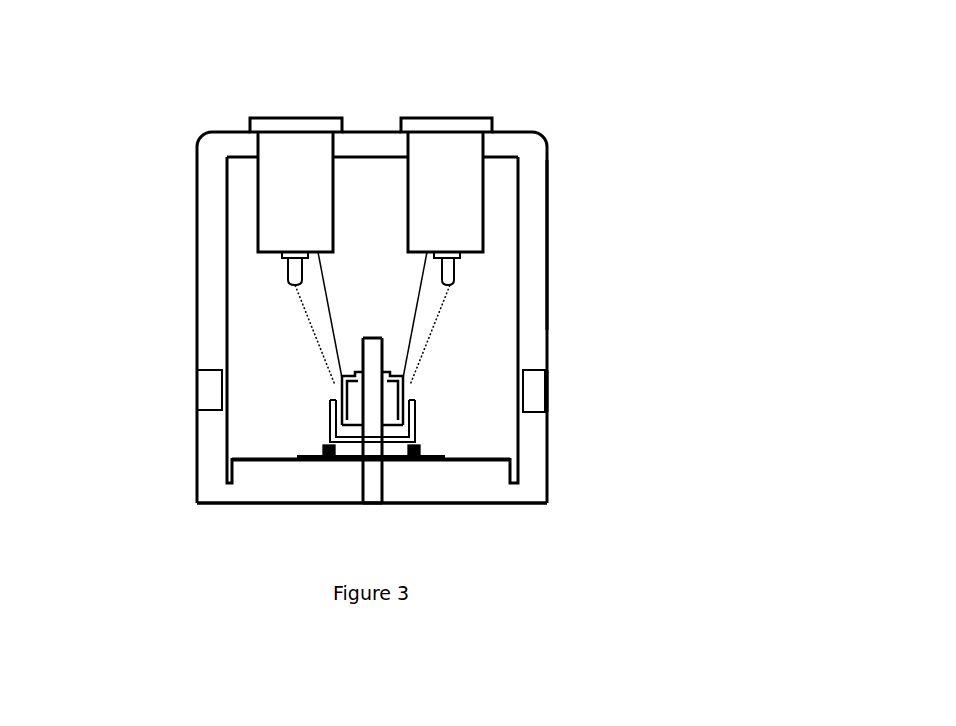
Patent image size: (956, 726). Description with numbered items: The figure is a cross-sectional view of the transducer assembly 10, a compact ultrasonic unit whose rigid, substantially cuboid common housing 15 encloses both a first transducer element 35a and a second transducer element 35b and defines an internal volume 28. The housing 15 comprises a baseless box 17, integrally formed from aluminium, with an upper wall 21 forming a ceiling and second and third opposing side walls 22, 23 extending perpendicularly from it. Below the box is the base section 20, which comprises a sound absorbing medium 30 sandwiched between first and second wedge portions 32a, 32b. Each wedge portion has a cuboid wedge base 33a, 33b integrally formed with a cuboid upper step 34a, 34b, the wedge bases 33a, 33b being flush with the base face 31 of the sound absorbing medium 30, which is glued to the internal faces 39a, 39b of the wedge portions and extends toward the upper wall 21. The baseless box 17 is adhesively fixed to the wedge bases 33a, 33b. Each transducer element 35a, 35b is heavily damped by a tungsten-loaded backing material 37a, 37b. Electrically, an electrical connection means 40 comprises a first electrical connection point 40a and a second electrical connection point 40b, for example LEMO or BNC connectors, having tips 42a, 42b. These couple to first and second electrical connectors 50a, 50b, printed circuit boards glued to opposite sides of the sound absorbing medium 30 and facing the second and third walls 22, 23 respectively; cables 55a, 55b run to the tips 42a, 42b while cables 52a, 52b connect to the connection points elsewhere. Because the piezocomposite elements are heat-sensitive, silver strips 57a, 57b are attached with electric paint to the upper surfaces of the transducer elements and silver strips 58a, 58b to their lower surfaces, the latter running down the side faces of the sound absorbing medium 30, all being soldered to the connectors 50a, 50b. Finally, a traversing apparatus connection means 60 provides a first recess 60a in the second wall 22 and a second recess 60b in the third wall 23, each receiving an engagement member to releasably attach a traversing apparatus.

The transducer assembly 10 is at (123, 122).
The housing 15 is at (565, 237).
The baseless box 17 is at (572, 193).
The base section 20 is at (217, 533).
The upper wall 21 is at (360, 143).
The second side wall 22 is at (212, 323).
The third side wall 23 is at (537, 328).
The internal volume 28 is at (517, 175).
The sound absorbing medium 30 is at (375, 473).
The base face 31 is at (372, 510).
The first wedge portion 32a is at (292, 482).
The second wedge portion 32b is at (470, 480).
The first wedge base 33a is at (235, 492).
The second wedge base 33b is at (527, 497).
The first upper step 34a is at (252, 468).
The second upper step 34b is at (498, 477).
The first transducer element 35a is at (298, 457).
The second transducer element 35b is at (445, 457).
The first backing material 37a is at (325, 446).
The second backing material 37b is at (418, 446).
The first internal face 39a is at (360, 493).
The second internal face 39b is at (385, 482).
The electrical connection means 40 is at (293, 63).
The first electrical connection point 40a is at (300, 140).
The second electrical connection point 40b is at (448, 143).
The tip of first electrical connection point 42a is at (283, 266).
The tip of second electrical connection point 42b is at (462, 266).
The first electrical connector 50a is at (357, 376).
The second electrical connector 50b is at (389, 376).
The first cable 52a is at (328, 286).
The second cable 52b is at (413, 288).
The first tip cable 55a is at (305, 326).
The second tip cable 55b is at (437, 328).
The first upper silver strip 57a is at (326, 410).
The second upper silver strip 57b is at (420, 410).
The first lower silver strip 58a is at (352, 443).
The second lower silver strip 58b is at (395, 443).
The traversing apparatus connection means 60 is at (568, 412).
The first recess 60a is at (210, 393).
The second recess 60b is at (548, 392).